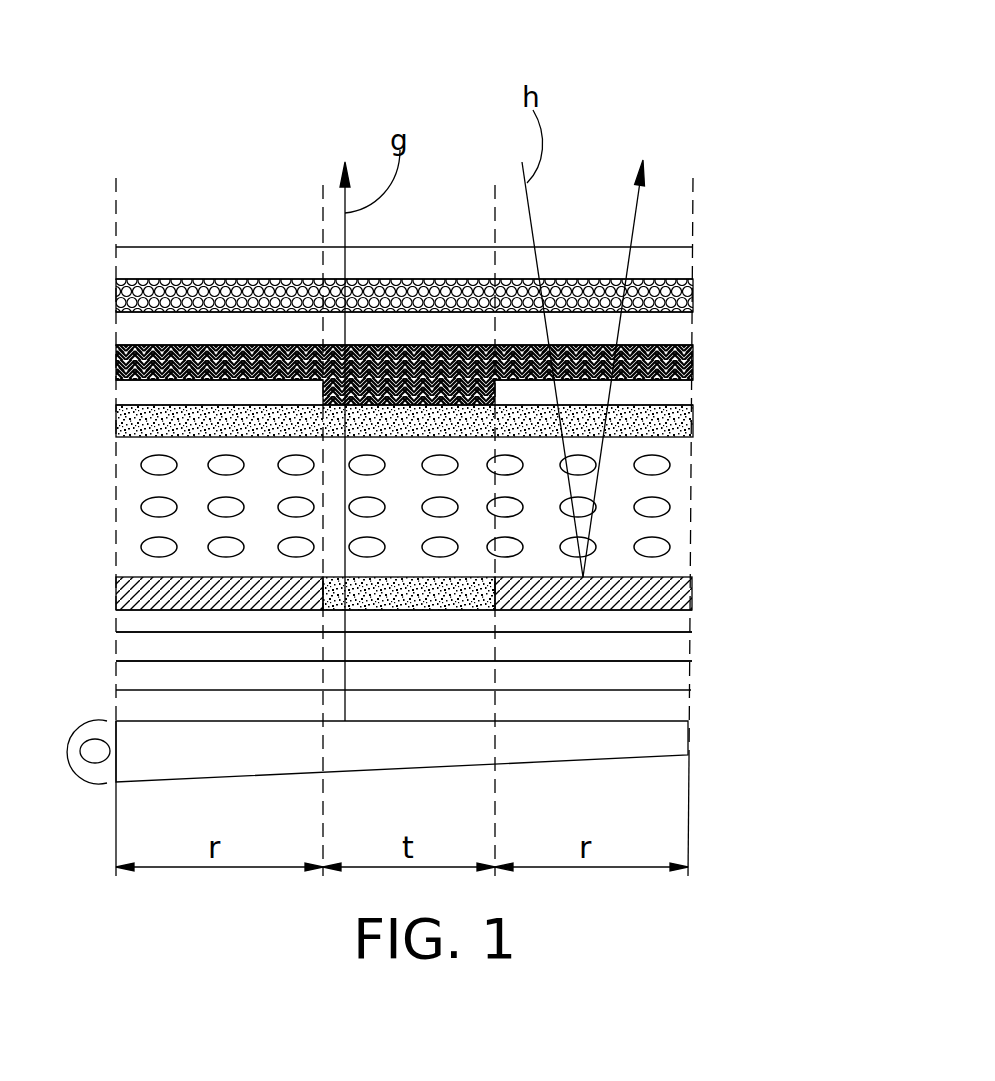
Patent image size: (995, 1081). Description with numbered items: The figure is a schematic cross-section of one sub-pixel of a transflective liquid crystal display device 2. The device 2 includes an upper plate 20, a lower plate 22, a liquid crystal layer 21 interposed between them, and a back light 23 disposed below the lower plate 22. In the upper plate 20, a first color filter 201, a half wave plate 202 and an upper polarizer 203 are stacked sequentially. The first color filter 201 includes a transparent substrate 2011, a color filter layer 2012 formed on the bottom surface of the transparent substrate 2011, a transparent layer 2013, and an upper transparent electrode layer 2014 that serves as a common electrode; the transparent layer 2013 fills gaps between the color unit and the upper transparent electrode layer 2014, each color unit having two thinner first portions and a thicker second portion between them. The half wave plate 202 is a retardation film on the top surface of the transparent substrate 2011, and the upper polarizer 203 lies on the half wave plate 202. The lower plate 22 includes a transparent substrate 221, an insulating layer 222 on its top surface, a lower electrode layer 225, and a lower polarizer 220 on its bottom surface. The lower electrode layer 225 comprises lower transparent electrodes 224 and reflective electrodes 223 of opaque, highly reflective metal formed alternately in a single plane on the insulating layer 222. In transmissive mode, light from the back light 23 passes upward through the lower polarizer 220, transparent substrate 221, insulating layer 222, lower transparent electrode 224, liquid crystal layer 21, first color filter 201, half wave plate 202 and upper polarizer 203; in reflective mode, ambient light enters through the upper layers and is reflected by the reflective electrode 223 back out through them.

The transflective liquid crystal display device 2 is at (420, 84).
The upper plate 20 is at (96, 251).
The liquid crystal layer 21 is at (96, 443).
The lower plate 22 is at (96, 582).
The back light 23 is at (670, 738).
The first color filter 201 is at (830, 318).
The half wave plate 202 is at (692, 292).
The upper polarizer 203 is at (675, 268).
The transparent substrate 2011 is at (678, 333).
The color filter layer 2012 is at (693, 362).
The transparent layer 2013 is at (678, 395).
The upper transparent electrode layer 2014 is at (693, 423).
The lower polarizer 220 is at (675, 673).
The transparent substrate 221 is at (677, 647).
The insulating layer 222 is at (675, 620).
The reflective electrode 223 is at (692, 592).
The lower transparent electrode 224 is at (497, 577).
The lower electrode layer 225 is at (835, 522).